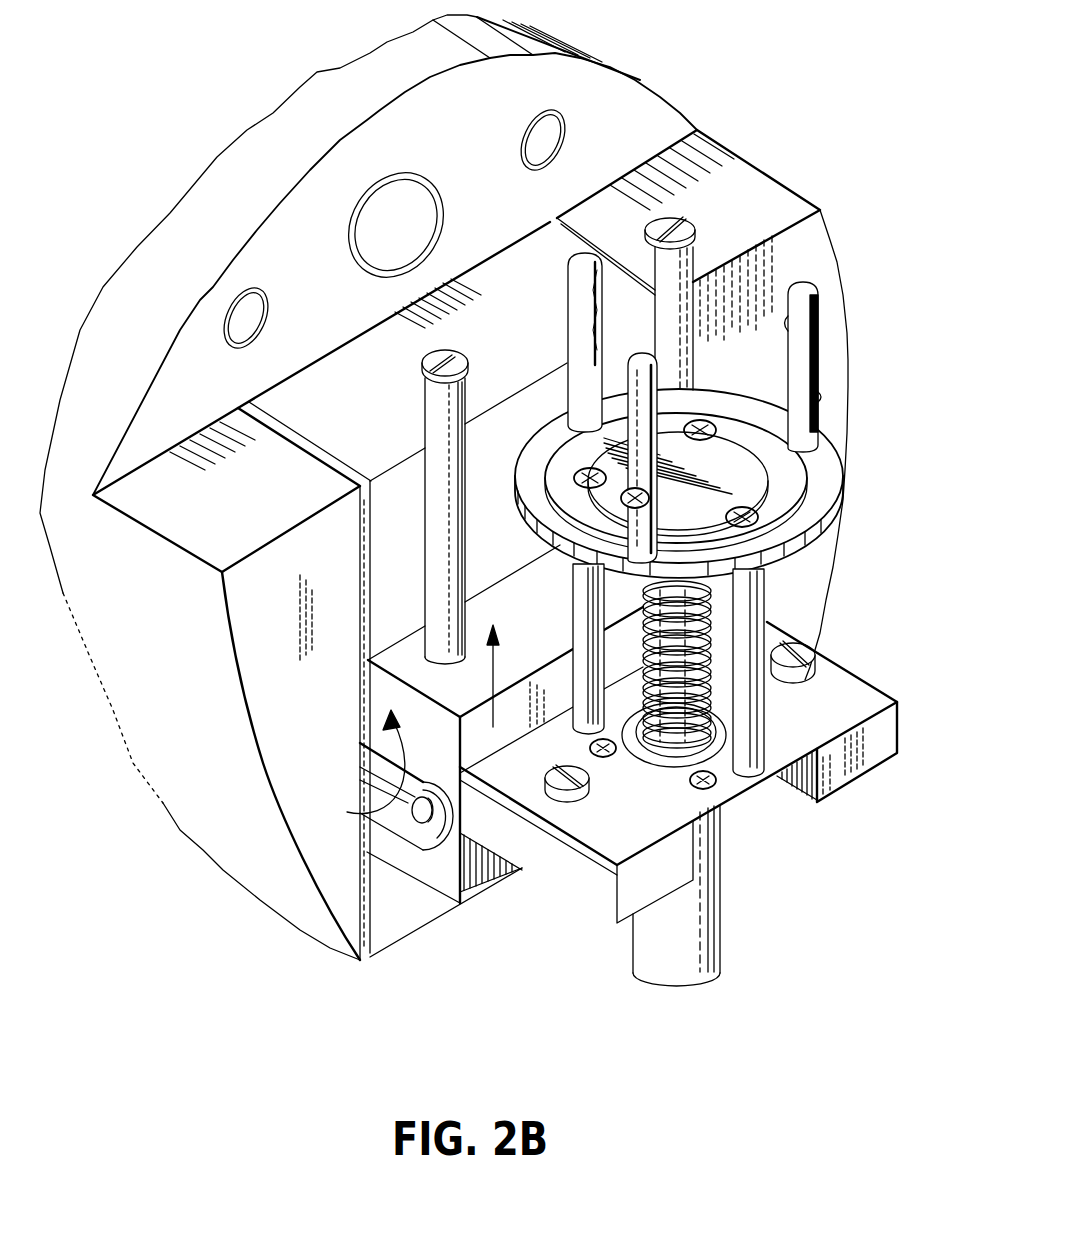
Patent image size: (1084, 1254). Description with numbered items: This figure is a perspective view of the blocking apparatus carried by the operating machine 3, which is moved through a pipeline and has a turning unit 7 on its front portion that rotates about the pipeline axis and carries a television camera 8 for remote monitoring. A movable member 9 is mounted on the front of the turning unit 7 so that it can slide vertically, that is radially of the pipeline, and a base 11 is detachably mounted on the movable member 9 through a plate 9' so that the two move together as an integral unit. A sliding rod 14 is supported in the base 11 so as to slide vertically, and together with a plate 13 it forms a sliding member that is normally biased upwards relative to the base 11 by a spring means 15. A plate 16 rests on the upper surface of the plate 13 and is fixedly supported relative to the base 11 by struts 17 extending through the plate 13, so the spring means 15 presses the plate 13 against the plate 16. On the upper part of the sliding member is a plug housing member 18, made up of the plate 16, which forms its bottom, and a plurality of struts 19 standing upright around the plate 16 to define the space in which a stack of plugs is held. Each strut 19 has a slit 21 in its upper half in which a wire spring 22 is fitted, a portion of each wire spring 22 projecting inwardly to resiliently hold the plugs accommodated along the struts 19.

The operating machine 3 is at (278, 113).
The turning unit 7 is at (252, 832).
The television camera 8 is at (413, 193).
The movable member 9 is at (638, 653).
The plate 9' is at (835, 712).
The base 11 is at (710, 917).
The plate 13 is at (813, 527).
The sliding rod 14 is at (667, 727).
The spring means 15 is at (707, 733).
The plate 16 is at (785, 497).
The struts 17 is at (753, 623).
The plug housing member 18 is at (785, 270).
The struts 19 is at (817, 313).
The slit 21 is at (600, 346).
The wire spring 22 is at (789, 320).